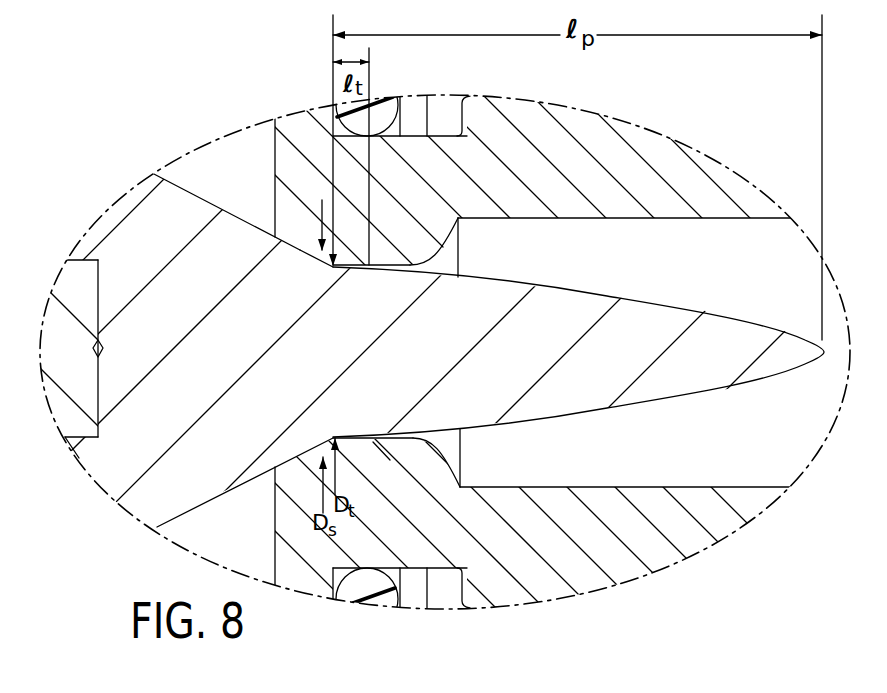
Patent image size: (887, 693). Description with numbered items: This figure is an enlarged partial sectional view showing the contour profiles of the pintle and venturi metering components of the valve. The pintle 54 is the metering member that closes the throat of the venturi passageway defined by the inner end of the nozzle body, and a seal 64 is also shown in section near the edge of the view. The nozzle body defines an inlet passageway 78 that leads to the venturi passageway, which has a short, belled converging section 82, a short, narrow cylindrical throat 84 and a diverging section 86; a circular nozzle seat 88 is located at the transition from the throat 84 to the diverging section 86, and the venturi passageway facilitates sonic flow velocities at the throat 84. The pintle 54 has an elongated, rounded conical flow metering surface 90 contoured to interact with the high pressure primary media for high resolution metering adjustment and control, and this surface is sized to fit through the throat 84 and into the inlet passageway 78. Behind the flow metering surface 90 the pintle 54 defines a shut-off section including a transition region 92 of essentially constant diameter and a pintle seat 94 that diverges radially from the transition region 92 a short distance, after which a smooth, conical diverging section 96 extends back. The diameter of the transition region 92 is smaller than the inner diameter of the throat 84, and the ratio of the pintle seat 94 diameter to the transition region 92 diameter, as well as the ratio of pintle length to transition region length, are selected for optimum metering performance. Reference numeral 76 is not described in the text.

The pintle 54 is at (119, 455).
The seal 64 is at (388, 604).
The body / housing 76 is at (606, 142).
The inlet passageway 78 is at (774, 446).
The belled converging section 82 is at (440, 463).
The throat 84 is at (410, 438).
The diverging section 86 is at (293, 490).
The nozzle seat 88 is at (357, 442).
The flow metering surface 90 is at (660, 303).
The transition region 92 is at (340, 270).
The pintle seat 94 is at (328, 262).
The conical diverging section 96 is at (235, 216).